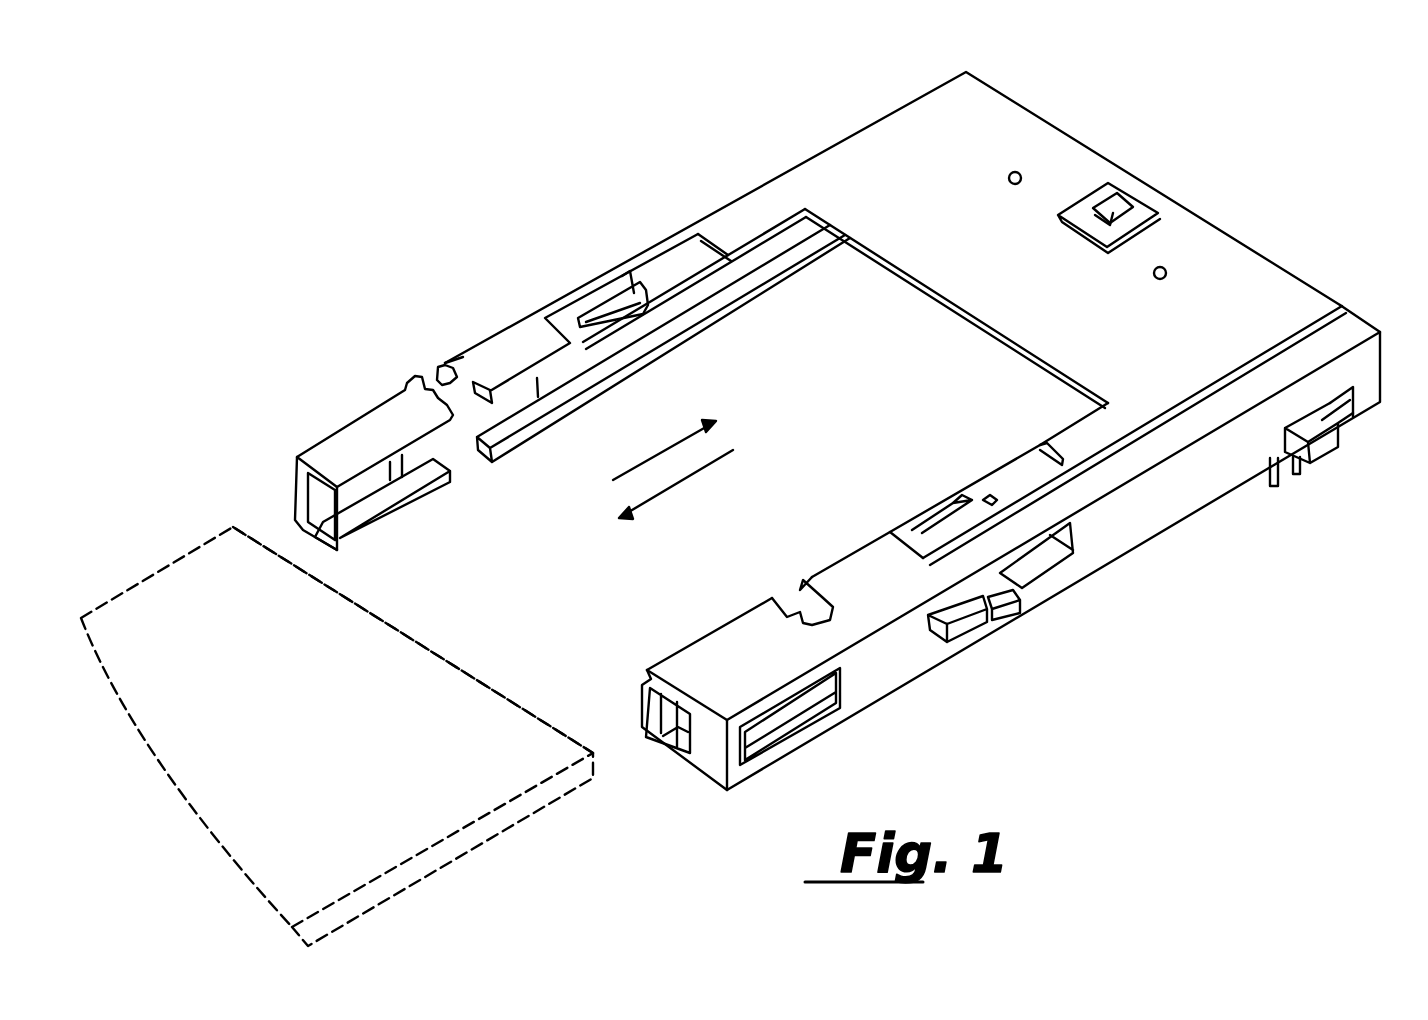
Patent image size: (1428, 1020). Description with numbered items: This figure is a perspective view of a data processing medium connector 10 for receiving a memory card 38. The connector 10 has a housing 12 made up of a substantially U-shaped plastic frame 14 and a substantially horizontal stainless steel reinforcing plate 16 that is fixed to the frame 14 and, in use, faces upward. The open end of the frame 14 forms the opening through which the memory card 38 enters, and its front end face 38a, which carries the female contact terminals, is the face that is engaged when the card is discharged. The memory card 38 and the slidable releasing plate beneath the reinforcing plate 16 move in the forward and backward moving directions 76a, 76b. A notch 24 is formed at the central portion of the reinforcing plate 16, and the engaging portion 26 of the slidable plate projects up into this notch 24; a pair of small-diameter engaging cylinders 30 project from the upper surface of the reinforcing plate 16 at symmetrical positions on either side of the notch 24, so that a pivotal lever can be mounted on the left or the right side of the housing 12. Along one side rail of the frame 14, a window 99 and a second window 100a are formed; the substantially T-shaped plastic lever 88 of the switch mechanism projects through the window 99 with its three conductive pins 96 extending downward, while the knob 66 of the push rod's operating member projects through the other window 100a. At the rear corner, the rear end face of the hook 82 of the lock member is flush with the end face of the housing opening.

The connector 10 is at (637, 225).
The housing 12 is at (930, 428).
The frame 14 is at (360, 437).
The reinforcing plate 16 is at (977, 115).
The notch 24 is at (1087, 202).
The engaging portion 26 is at (1087, 247).
The engaging cylinders 30 is at (1015, 185).
The memory card 38 is at (468, 814).
The front end face 38a is at (470, 668).
The knob 66 is at (967, 620).
The moving direction 76a is at (700, 425).
The moving direction 76b is at (712, 468).
The hook 82 is at (643, 723).
The lever 88 is at (1324, 450).
The conductive pins 96 is at (1292, 477).
The window 99 is at (1352, 413).
The latch window 100a is at (1043, 565).